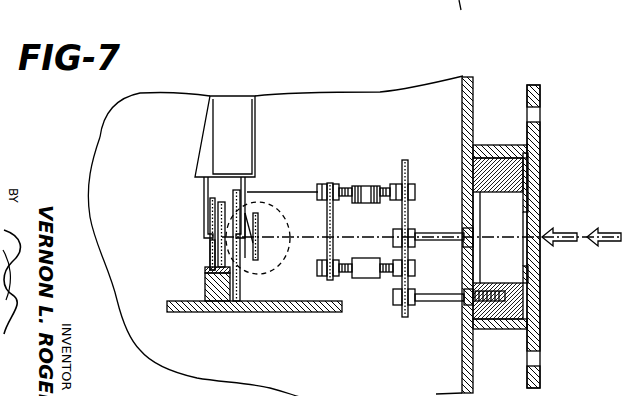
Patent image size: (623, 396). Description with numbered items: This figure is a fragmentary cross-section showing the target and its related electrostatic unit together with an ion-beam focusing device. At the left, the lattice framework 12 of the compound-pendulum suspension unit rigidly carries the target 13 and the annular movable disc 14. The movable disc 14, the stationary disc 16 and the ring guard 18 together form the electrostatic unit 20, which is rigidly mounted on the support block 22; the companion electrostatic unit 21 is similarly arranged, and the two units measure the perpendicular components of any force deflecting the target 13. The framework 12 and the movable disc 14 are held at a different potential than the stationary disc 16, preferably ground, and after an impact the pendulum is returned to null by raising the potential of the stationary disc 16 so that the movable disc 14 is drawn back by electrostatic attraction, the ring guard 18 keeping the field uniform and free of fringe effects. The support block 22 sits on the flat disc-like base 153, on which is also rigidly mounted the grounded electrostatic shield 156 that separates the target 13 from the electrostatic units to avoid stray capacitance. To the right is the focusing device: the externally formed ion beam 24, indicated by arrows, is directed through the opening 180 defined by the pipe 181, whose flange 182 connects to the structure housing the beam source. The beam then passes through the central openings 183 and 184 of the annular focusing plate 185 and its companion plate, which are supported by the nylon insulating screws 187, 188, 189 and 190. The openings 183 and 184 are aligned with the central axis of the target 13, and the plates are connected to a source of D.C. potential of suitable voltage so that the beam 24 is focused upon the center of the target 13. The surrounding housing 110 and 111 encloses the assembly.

The lattice framework 12 is at (207, 127).
The target 13 is at (261, 266).
The movable disc 14 is at (211, 248).
The stationary disc 16 is at (222, 258).
The ring guard 18 is at (213, 199).
The electrostatic unit 20 is at (186, 218).
The electrostatic unit 21 is at (262, 203).
The support block 22 is at (205, 286).
The ion beam 24 is at (600, 232).
The mounting flange wall 110 is at (486, 58).
The housing 111 is at (407, 118).
The disc-like base 153 is at (189, 311).
The electrostatic shield 156 is at (297, 192).
The opening 180 is at (556, 201).
The pipe 181 is at (512, 127).
The flange 182 is at (532, 85).
The central opening 183 is at (333, 222).
The central opening 184 is at (409, 220).
The annular focusing plate 185 is at (333, 283).
The nylon insulating screw 187 is at (423, 242).
The nylon insulating screw 188 is at (428, 298).
The nylon insulating screw 189 is at (380, 187).
The nylon insulating screw 190 is at (387, 279).